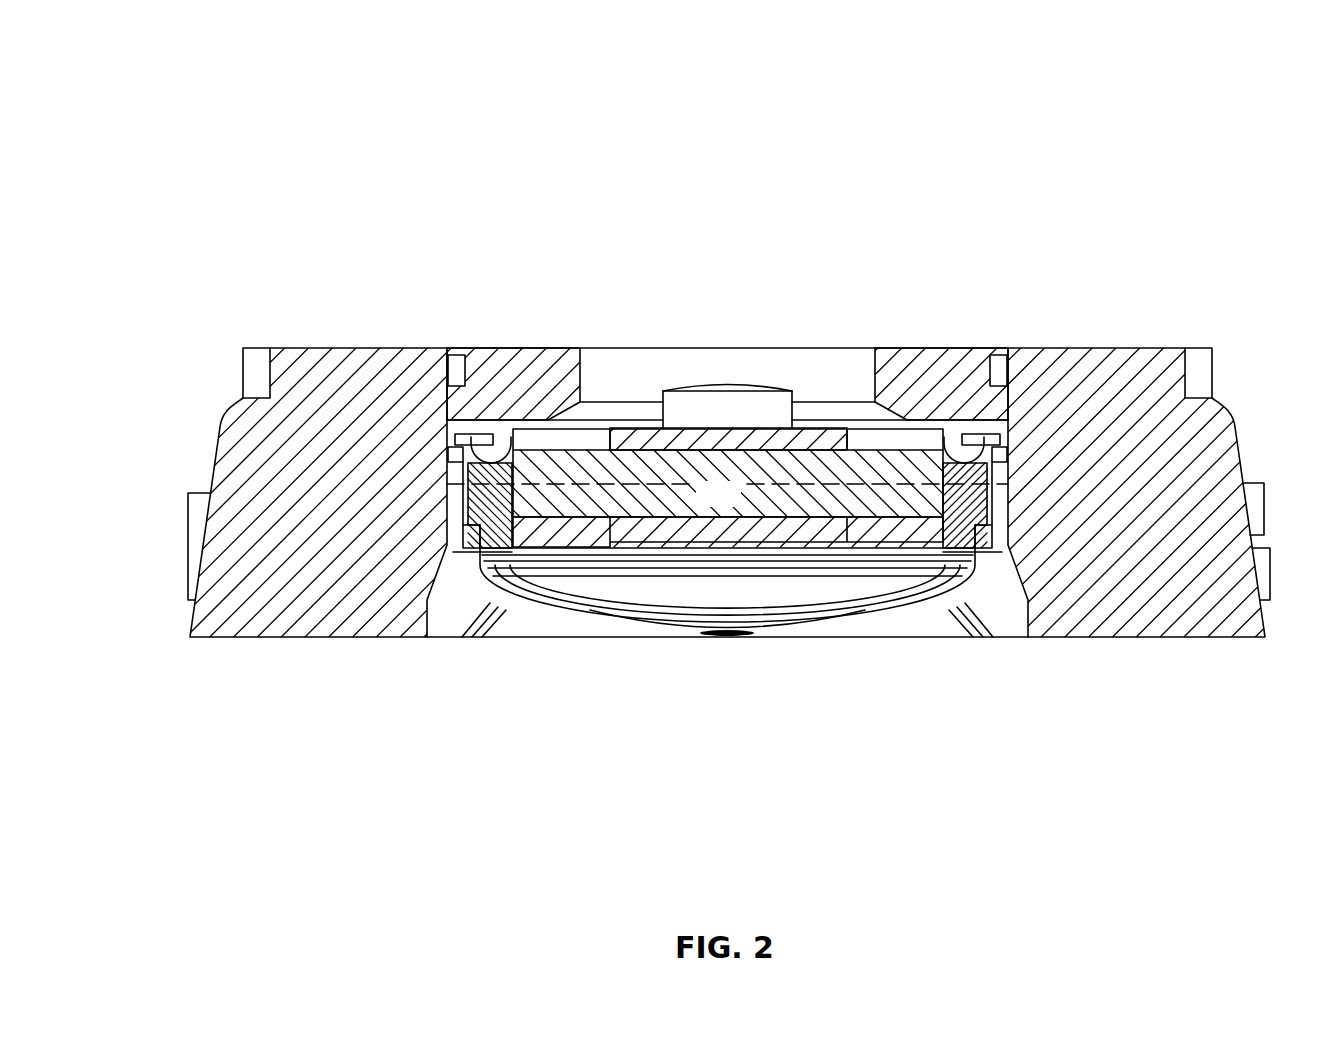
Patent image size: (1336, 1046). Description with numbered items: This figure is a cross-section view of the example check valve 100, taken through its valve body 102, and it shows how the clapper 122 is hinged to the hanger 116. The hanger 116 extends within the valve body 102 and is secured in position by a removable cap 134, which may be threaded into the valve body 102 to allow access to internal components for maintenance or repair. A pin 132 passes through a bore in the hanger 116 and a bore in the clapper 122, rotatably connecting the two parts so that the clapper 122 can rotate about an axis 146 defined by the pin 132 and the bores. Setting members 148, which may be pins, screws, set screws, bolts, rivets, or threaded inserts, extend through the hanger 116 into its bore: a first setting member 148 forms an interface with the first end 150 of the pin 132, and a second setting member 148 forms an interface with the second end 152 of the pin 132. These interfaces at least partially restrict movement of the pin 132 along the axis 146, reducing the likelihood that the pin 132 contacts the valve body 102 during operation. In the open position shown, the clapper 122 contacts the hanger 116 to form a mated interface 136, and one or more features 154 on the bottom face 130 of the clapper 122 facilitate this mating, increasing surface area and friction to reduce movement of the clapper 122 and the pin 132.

The check valve 100 is at (232, 64).
The valve body 102 is at (298, 623).
The hanger 116 is at (463, 440).
The clapper 122 is at (478, 568).
The bottom face 130 is at (907, 597).
The pin 132 is at (738, 506).
The cap 134 is at (493, 352).
The mated interface 136 is at (553, 543).
The axis 146 is at (628, 485).
The setting member 148 is at (457, 527).
The first end 150 is at (523, 428).
The second end 152 is at (903, 400).
The feature 154 is at (784, 622).